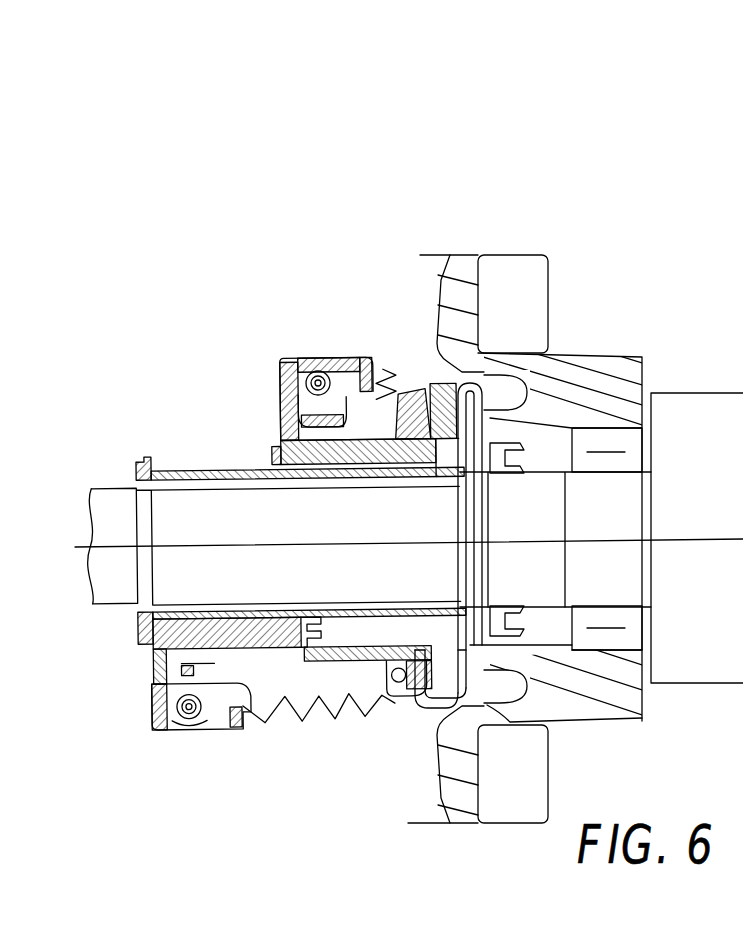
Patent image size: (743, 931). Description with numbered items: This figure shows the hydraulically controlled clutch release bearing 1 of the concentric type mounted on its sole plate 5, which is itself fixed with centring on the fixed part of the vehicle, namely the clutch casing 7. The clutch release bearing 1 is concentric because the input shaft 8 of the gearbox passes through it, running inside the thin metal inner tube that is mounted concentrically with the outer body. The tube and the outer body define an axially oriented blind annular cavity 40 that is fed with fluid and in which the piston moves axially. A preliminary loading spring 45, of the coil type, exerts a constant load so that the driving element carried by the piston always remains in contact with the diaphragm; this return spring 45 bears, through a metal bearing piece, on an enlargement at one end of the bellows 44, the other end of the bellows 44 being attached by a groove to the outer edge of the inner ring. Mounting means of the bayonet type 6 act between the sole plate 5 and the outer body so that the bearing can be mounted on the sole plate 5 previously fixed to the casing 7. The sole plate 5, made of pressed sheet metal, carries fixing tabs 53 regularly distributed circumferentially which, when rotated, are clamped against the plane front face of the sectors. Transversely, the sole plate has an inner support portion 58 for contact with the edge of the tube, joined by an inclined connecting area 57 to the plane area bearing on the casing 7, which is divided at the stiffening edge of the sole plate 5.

The clutch release bearing 1 is at (235, 463).
The sole plate 5 is at (466, 385).
The bayonet-type mounting means 6 is at (427, 716).
The clutch casing 7 is at (145, 432).
The input shaft 8 is at (118, 583).
The blind annular cavity 40 is at (336, 636).
The bellows 44 is at (283, 720).
The preliminary loading spring 45 is at (218, 727).
The fixing tabs 53 is at (397, 715).
The inclined connecting area 57 is at (512, 426).
The support portion 58 is at (483, 647).